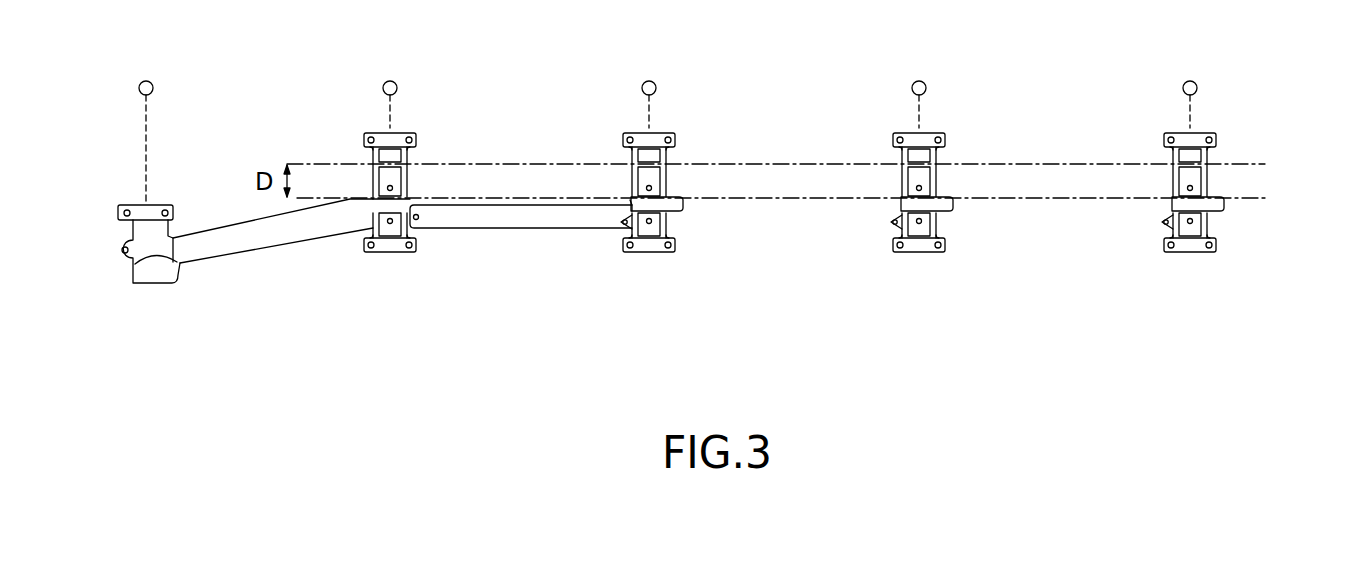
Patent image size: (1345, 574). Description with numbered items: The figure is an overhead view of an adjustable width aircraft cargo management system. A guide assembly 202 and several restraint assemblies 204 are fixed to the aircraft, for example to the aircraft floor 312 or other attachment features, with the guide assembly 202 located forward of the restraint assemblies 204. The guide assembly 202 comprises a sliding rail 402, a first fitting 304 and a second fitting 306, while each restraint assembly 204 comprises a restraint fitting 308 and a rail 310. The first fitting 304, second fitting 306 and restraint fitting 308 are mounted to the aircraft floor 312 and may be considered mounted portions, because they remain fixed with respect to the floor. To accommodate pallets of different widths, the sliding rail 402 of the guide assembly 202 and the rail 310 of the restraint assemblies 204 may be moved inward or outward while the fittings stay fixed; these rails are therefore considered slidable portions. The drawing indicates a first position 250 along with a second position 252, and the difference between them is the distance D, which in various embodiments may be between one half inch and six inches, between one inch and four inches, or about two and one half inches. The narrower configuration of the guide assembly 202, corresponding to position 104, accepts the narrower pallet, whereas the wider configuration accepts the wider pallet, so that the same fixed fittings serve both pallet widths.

The position 104 is at (560, 199).
The guide assembly 202 is at (273, 286).
The restraint assembly 204 is at (963, 203).
The first position 250 is at (287, 197).
The second position 252 is at (331, 164).
The first fitting 304 is at (122, 262).
The second fitting 306 is at (390, 252).
The restraint fitting 308 is at (683, 214).
The rail 310 is at (672, 205).
The aircraft floor 312 is at (894, 252).
The sliding rail 402 is at (208, 243).